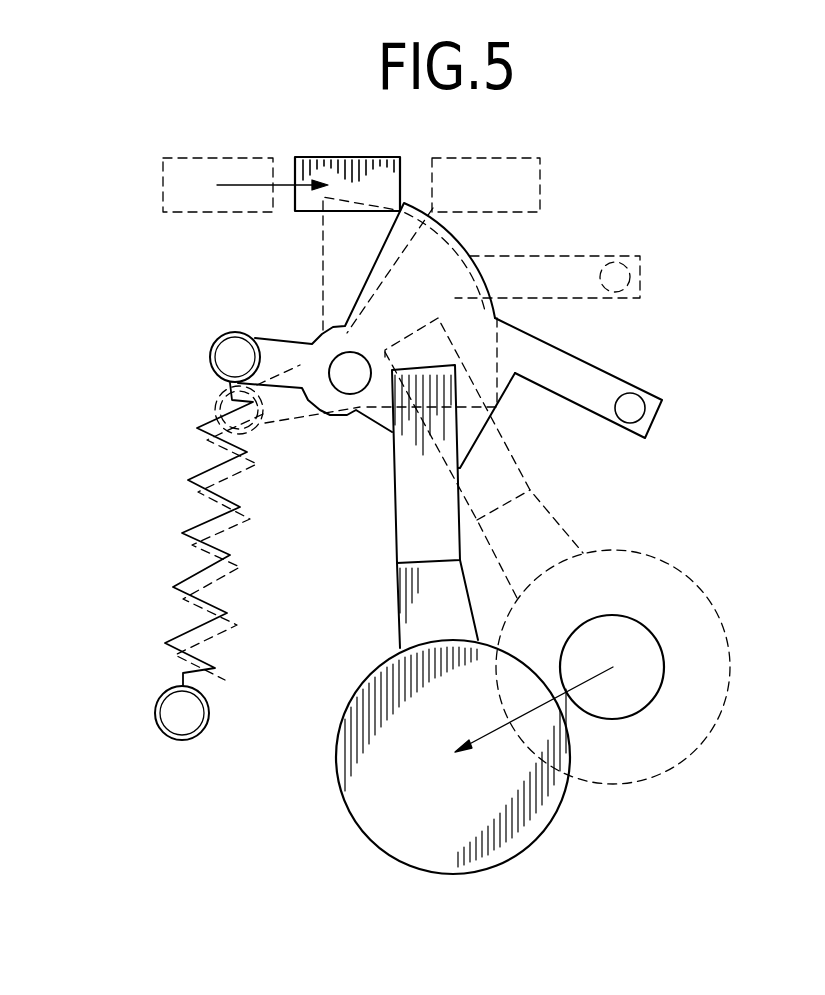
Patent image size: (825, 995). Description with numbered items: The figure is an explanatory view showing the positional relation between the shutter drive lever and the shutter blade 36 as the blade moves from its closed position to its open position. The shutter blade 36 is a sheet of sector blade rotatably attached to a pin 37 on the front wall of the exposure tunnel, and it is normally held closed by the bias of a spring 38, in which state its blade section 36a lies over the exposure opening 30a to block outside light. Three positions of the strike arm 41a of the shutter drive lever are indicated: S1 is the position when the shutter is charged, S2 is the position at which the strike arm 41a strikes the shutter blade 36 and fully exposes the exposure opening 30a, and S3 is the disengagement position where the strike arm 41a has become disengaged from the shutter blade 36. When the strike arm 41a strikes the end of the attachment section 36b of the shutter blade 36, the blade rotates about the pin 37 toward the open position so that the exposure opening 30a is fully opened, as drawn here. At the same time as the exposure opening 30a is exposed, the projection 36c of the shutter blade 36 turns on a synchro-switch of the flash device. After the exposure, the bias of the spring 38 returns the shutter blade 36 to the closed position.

The charged position of the strike arm S1 is at (163, 188).
The striking position of the strike arm S2 is at (400, 157).
The disengagement position of the strike arm S3 is at (540, 186).
The strike arm 41a is at (303, 168).
The shutter blade 36 is at (355, 640).
The blade section 36a is at (540, 815).
The attachment section 36b is at (441, 310).
The projection 36c is at (636, 409).
The pin 37 is at (350, 385).
The spring 38 is at (180, 533).
The exposure opening 30a is at (642, 663).